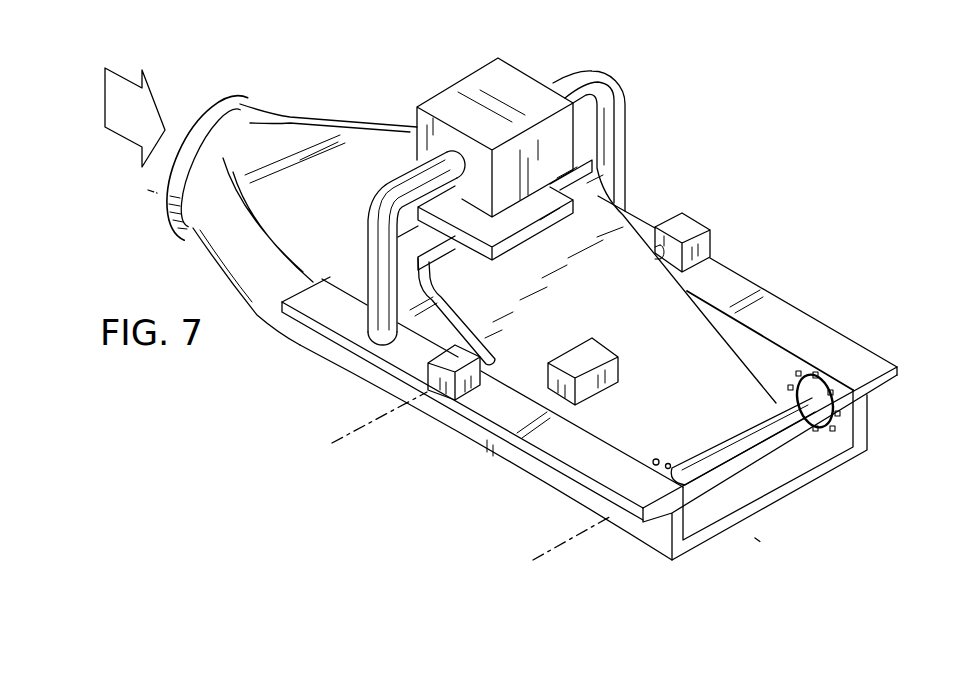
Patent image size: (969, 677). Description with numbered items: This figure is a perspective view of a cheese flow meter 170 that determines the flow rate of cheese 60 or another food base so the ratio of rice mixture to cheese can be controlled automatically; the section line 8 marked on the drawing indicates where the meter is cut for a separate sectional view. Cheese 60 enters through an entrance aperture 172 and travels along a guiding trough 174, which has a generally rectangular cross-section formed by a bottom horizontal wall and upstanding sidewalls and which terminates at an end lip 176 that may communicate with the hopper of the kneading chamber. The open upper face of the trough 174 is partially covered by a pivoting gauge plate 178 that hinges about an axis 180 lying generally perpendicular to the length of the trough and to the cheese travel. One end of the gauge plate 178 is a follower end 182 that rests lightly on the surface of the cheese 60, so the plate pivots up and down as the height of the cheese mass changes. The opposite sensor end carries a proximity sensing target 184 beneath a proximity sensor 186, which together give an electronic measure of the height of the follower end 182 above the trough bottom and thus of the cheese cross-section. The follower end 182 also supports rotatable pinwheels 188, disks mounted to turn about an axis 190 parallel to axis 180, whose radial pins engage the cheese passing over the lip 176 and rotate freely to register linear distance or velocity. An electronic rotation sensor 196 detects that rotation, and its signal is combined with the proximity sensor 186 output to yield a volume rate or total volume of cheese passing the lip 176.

The cheese 60 is at (120, 87).
The section line 8- 8 is at (142, 186).
The cheese flow meter 170 is at (760, 207).
The entrance aperture 172 is at (204, 114).
The guiding trough 174 is at (458, 442).
The end lip 176 is at (713, 540).
The pivoting gauge plate 178 is at (693, 313).
The axis 180 is at (367, 423).
The follower end 182 is at (778, 402).
The proximity sensing target 184 is at (445, 207).
The proximity sensor 186 is at (513, 87).
The pinwheels 188 is at (820, 432).
The axis 190 is at (552, 553).
The electronic rotation sensor 196 is at (587, 407).